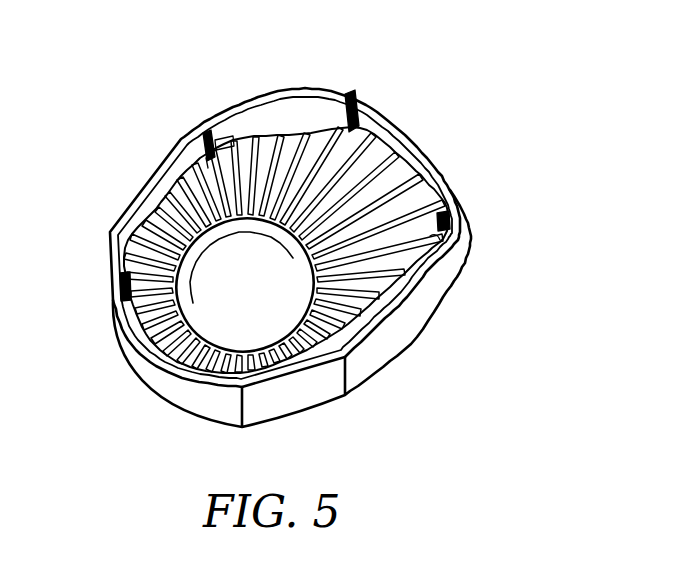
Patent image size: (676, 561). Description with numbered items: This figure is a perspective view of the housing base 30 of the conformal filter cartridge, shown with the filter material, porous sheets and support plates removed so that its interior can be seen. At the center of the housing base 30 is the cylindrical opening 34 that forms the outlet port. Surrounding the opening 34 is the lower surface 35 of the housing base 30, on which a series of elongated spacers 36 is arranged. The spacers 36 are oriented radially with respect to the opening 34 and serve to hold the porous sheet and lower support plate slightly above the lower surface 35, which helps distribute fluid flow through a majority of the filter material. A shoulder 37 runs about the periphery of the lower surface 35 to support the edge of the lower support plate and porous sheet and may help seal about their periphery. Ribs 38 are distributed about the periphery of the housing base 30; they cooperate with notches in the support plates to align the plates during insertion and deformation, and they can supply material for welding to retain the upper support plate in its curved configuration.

The housing base 30 is at (326, 232).
The cylindrical opening 34 is at (259, 307).
The lower surface 35 is at (313, 142).
The spacers 36 is at (282, 140).
The shoulder 37 is at (422, 183).
The ribs 38 is at (212, 132).